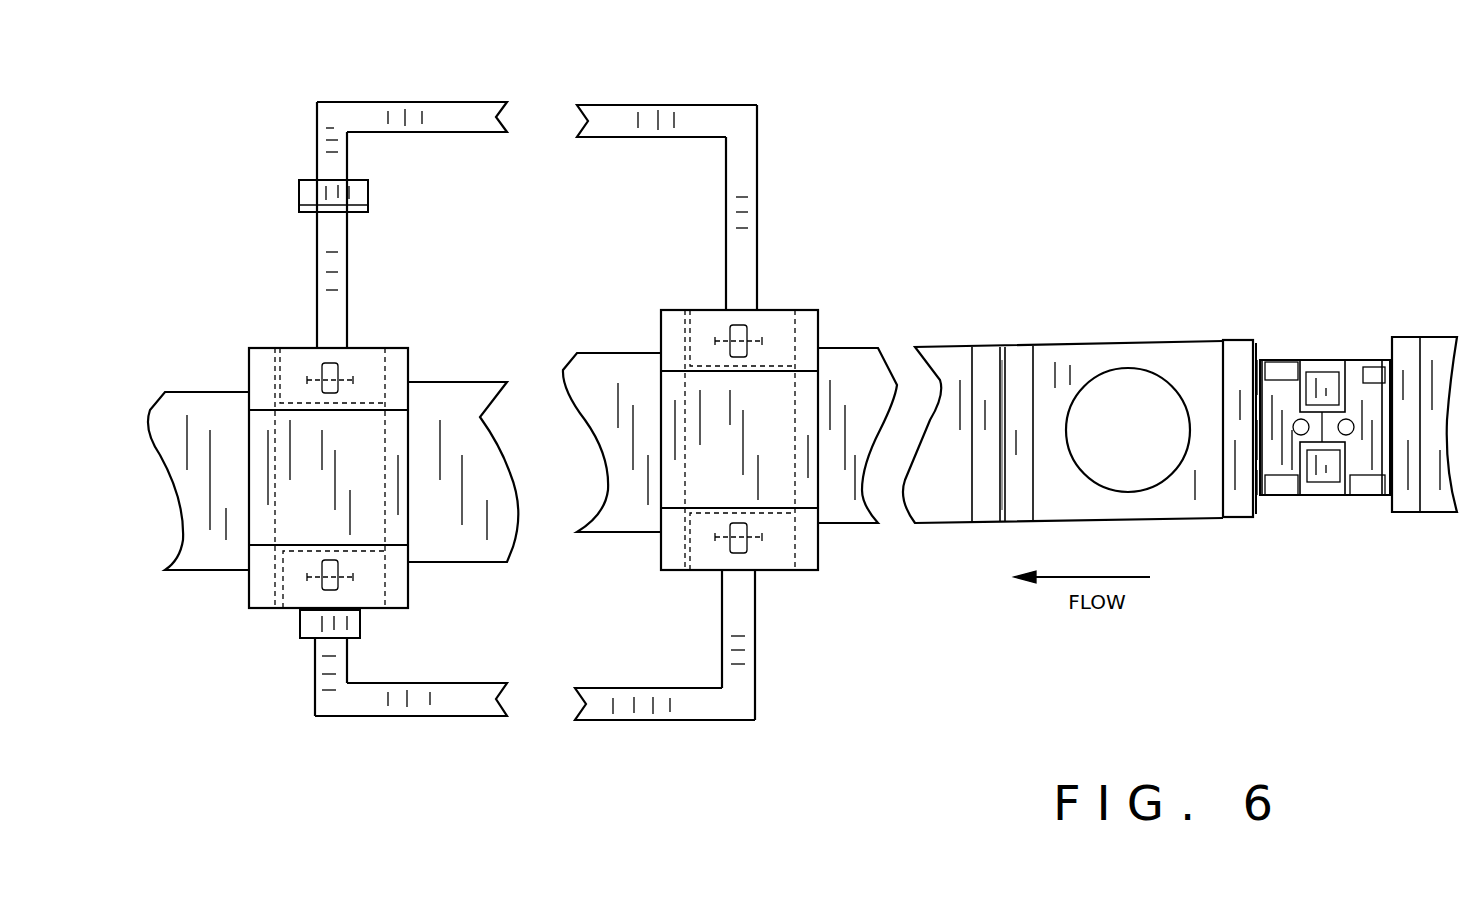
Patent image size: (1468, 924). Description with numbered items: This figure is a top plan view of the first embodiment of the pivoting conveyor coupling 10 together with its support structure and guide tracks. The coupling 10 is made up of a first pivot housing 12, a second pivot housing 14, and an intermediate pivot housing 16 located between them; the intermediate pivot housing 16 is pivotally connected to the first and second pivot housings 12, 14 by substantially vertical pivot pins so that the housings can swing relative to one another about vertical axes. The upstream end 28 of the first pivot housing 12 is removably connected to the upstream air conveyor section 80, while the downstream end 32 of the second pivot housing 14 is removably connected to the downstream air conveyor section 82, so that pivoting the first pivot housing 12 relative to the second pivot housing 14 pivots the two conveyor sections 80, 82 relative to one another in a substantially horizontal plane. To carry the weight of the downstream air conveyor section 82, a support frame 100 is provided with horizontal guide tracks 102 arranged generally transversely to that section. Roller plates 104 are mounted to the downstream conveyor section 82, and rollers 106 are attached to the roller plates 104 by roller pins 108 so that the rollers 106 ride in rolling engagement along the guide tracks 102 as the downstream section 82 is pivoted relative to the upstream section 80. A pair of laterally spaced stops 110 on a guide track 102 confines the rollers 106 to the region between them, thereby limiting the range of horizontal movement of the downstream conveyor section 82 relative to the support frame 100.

The pivoting conveyor coupling 10 is at (1301, 447).
The first pivot housing 12 is at (1365, 457).
The second pivot housing 14 is at (1275, 463).
The intermediate pivot housing 16 is at (1323, 493).
The upstream end of the first pivot housing 28 is at (1397, 487).
The downstream end of the second pivot housing 32 is at (1243, 500).
The upstream air conveyor section 80 is at (1423, 417).
The downstream air conveyor section 82 is at (147, 420).
The support frame 100 is at (458, 118).
The horizontal guide tracks 102 is at (327, 326).
The roller plates 104 is at (252, 590).
The rollers 106 is at (335, 365).
The roller pins 108 is at (352, 380).
The stops 110 is at (310, 188).